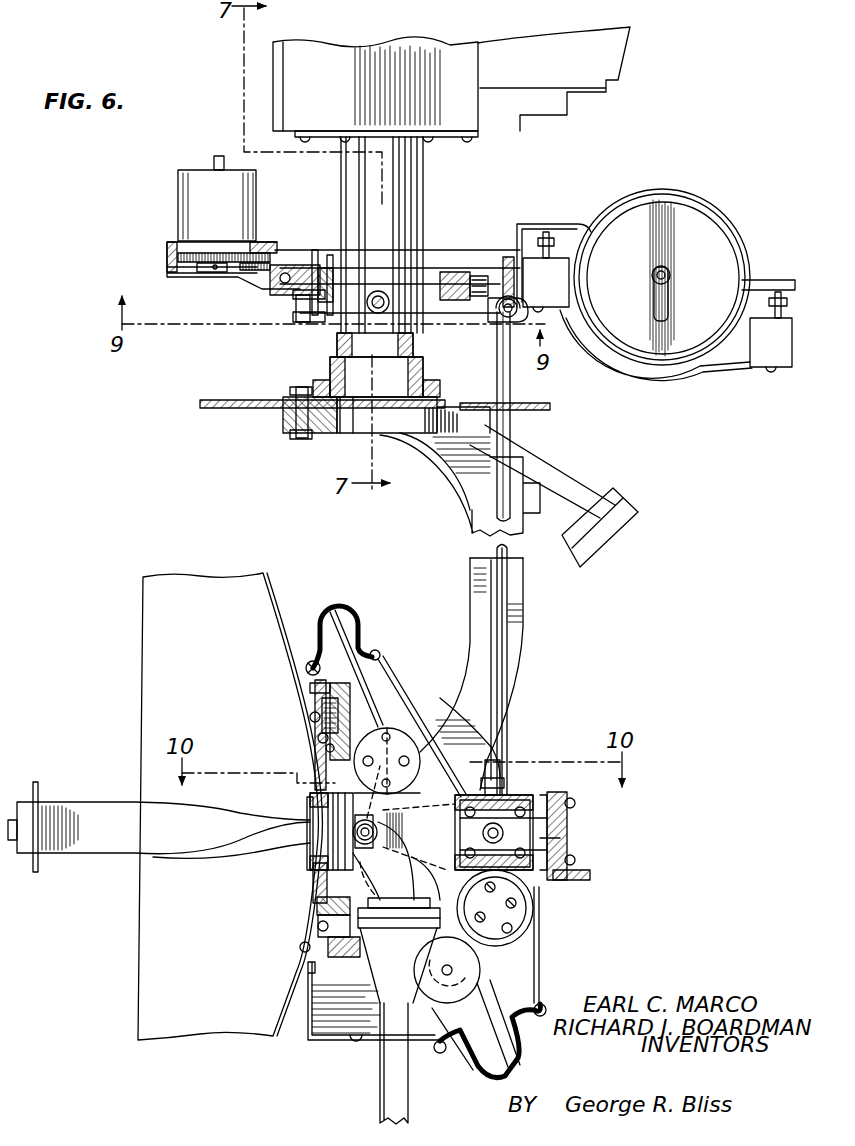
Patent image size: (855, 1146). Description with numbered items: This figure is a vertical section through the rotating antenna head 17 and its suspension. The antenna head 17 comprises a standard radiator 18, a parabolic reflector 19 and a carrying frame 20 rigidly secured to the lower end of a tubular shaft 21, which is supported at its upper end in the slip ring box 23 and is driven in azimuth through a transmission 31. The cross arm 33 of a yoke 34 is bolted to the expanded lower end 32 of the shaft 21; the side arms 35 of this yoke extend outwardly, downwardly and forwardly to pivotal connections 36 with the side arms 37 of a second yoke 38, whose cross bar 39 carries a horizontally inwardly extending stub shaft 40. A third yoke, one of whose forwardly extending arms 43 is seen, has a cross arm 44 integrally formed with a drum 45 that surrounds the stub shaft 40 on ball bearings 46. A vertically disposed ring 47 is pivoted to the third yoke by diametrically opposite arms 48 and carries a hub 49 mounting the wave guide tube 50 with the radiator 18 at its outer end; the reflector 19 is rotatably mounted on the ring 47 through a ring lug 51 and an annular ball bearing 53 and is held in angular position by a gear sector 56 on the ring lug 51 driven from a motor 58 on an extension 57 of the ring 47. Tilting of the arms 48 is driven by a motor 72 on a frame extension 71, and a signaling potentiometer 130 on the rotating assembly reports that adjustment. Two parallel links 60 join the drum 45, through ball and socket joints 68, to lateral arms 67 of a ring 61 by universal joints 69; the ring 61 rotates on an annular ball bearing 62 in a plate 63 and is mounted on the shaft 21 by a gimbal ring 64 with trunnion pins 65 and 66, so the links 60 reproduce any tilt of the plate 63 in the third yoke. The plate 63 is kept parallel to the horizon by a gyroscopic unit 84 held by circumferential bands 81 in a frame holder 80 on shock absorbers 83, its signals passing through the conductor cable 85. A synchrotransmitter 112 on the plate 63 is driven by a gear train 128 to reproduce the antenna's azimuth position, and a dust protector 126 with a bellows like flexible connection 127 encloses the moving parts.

The antenna head 17 is at (122, 612).
The radiator 18 is at (102, 860).
The parabolic reflector 19 is at (275, 592).
The carrying frame 20 is at (562, 722).
The tubular shaft 21 is at (410, 218).
The slip ring box 23 is at (289, 84).
The transmission 31 is at (548, 68).
The expanded lower end 32 is at (430, 382).
The cross arm 33 is at (325, 432).
The yoke 34 is at (470, 578).
The side arms 35 is at (526, 616).
The pivotal connections 36 is at (405, 832).
The side arms 37 is at (560, 812).
The second yoke 38 is at (590, 877).
The cross bar 39 is at (570, 832).
The stub shaft 40 is at (502, 819).
The arm 43 is at (414, 850).
The cross arm 44 is at (530, 902).
The drum 45 is at (520, 796).
The ball bearings 46 is at (492, 790).
The ring 47 is at (318, 903).
The arms 48 is at (366, 878).
The hub 49 is at (322, 850).
The wave guide tube 50 is at (548, 464).
The ring lug 51 is at (302, 950).
The annular ball bearing 53 is at (318, 928).
The gear sector 56 is at (312, 704).
The extension 57 is at (366, 740).
The motor 58 is at (404, 708).
The parallel links 60 is at (512, 674).
The ring 61 is at (295, 302).
The annular ball bearing 62 is at (452, 274).
The plate 63 is at (265, 295).
The gimbal ring 64 is at (320, 318).
The gimbal trunnion pins 65 is at (318, 298).
The gimbal trunnion pins 66 is at (384, 298).
The arms 67 is at (488, 325).
The ball and socket universal joint connection 68 is at (562, 840).
The universal joint connections 69 is at (514, 355).
The frame extension 71 is at (528, 914).
The motor 72 is at (522, 932).
The frame holder 80 is at (552, 224).
The circumferential bands 81 is at (618, 194).
The shock absorbers 83 is at (572, 282).
The gyroscopic unit 84 is at (722, 246).
The conductor cable 85 is at (654, 300).
The synchrotransmitter 112 is at (184, 206).
The dust protector 126 is at (367, 727).
The bellows like flexible connection 127 is at (360, 620).
The gear train 128 is at (268, 232).
The signaling potentiometer 130 is at (437, 956).